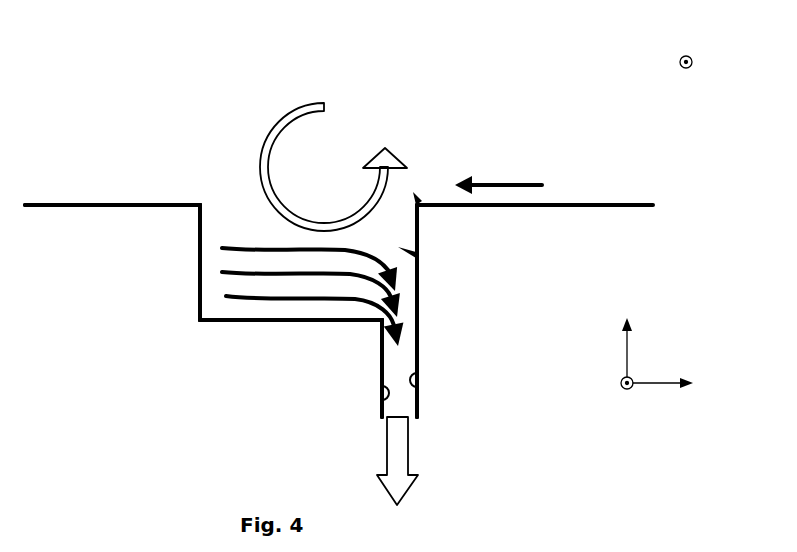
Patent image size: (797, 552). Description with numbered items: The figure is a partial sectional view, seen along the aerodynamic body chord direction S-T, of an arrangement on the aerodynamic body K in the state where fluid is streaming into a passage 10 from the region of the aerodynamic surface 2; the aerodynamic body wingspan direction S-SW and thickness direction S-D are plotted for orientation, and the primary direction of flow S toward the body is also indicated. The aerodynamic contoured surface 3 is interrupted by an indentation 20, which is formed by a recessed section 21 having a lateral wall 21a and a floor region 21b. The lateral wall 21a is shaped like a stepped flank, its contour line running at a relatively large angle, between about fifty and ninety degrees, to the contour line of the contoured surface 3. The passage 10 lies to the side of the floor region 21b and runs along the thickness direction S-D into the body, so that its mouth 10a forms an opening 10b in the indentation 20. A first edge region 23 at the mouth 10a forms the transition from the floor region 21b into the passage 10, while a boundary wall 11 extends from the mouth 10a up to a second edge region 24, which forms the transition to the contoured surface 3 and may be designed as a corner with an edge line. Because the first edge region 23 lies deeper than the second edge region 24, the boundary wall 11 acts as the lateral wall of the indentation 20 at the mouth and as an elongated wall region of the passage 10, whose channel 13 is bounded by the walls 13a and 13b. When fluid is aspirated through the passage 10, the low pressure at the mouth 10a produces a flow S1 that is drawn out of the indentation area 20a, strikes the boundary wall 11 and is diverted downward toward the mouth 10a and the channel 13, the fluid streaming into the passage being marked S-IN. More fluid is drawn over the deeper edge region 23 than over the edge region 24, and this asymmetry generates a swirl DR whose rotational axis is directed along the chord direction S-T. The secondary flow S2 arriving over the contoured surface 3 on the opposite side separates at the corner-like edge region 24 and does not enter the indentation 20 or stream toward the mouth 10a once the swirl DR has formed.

The aerodynamic surface 2 is at (84, 181).
The aerodynamic contoured surface 3 is at (129, 202).
The indentation 20 is at (219, 190).
The indentation area 20a is at (251, 239).
The recessed section 21 is at (217, 322).
The lateral wall 21a is at (200, 280).
The floor region 21b is at (266, 322).
The first edge region 23 is at (378, 316).
The passage 10 is at (428, 342).
The mouth 10a is at (416, 318).
The opening 10b is at (384, 340).
The boundary wall 11 is at (402, 248).
The channel 13 is at (420, 400).
The wall 13a is at (381, 403).
The wall 13b is at (421, 378).
The second edge region 24 is at (419, 203).
The flow S1 is at (222, 295).
The secondary flow S2 is at (520, 176).
The swirl DR is at (318, 97).
The aerodynamic body K is at (543, 80).
The primary direction of flow S is at (697, 63).
The inflow direction S-IN is at (408, 450).
The aerodynamic body thickness direction S-D is at (626, 337).
The aerodynamic body wingspan direction S-SW is at (696, 386).
The aerodynamic body chord direction S-T is at (624, 399).